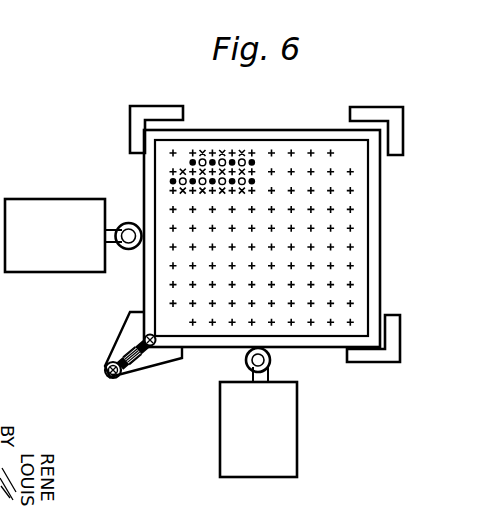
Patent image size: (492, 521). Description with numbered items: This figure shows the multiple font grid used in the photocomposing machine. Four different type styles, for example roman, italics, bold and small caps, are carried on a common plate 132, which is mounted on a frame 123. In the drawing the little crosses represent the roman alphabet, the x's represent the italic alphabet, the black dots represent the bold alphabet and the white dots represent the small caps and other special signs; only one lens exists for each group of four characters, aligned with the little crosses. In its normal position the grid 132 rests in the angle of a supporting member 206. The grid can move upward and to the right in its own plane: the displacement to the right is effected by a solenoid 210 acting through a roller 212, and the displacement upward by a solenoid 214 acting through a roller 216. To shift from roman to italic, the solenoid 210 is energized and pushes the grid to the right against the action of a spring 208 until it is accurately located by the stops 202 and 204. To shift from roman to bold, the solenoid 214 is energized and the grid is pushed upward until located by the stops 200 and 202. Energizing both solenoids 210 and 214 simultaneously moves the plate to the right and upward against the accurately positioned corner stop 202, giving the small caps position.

The frame 123 is at (213, 130).
The plate 132 is at (353, 241).
The stop 200 is at (151, 105).
The stop 202 is at (403, 118).
The stop 204 is at (400, 338).
The supporting member 206 is at (160, 363).
The spring 208 is at (133, 352).
The solenoid 210 is at (55, 235).
The roller 212 is at (128, 223).
The solenoid 214 is at (258, 429).
The roller 216 is at (270, 360).